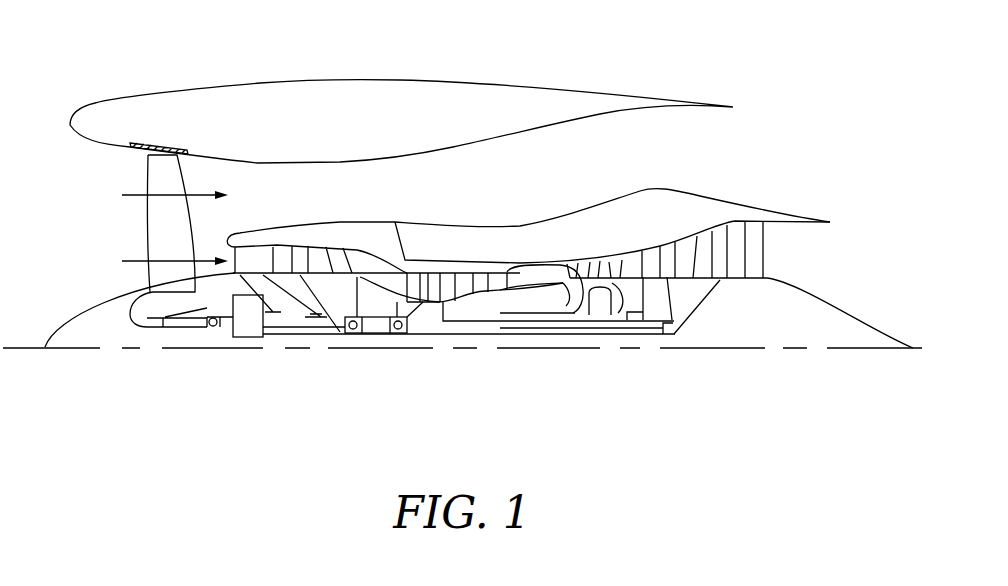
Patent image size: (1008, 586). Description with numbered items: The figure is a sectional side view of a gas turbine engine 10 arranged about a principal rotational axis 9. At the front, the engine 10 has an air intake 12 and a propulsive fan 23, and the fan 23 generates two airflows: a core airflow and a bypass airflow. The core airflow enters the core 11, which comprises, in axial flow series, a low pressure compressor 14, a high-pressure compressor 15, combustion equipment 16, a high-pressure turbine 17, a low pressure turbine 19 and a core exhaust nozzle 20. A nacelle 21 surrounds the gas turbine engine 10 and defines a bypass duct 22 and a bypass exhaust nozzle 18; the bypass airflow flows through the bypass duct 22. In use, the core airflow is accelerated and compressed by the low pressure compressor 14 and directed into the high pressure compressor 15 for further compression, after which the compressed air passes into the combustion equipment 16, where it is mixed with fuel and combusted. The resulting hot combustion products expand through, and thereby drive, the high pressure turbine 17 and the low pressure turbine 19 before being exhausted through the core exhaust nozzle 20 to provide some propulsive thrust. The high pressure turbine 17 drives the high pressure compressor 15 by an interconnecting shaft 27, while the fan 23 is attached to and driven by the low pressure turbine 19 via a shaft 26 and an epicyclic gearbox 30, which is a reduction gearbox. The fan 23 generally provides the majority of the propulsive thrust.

The principal rotational axis 9 is at (772, 350).
The gas turbine engine 10 is at (143, 96).
The core 11 is at (509, 242).
The air intake 12 is at (96, 173).
The low pressure compressor 14 is at (317, 253).
The high-pressure compressor 15 is at (463, 283).
The combustion equipment 16 is at (537, 286).
The high-pressure turbine 17 is at (600, 268).
The bypass exhaust nozzle 18 is at (727, 146).
The low pressure turbine 19 is at (737, 238).
The core exhaust nozzle 20 is at (792, 252).
The nacelle 21 is at (373, 93).
The bypass duct 22 is at (664, 161).
The propulsive fan 23 is at (152, 228).
The shaft 26 is at (457, 337).
The interconnecting shaft 27 is at (493, 330).
The epicyclic gearbox 30 is at (247, 327).